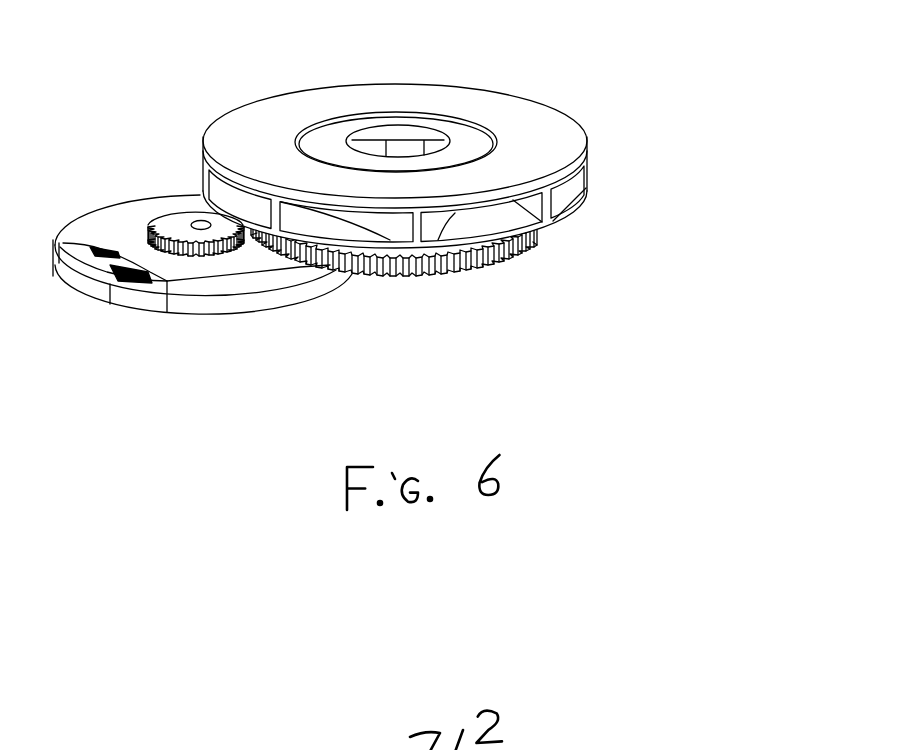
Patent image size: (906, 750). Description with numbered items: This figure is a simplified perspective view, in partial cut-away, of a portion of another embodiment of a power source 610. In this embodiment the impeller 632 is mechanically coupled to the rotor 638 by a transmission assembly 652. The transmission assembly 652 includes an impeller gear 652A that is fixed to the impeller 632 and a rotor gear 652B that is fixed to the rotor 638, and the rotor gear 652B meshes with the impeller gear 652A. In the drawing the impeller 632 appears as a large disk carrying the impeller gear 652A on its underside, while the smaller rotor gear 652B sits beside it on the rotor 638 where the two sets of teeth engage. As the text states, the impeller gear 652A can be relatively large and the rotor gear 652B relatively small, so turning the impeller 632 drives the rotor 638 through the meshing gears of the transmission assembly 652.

The power source 610 is at (494, 131).
The impeller 632 is at (480, 97).
The rotor 638 is at (210, 305).
The transmission assembly 652 is at (421, 302).
The impeller gear 652A is at (393, 277).
The rotor gear 652B is at (227, 250).